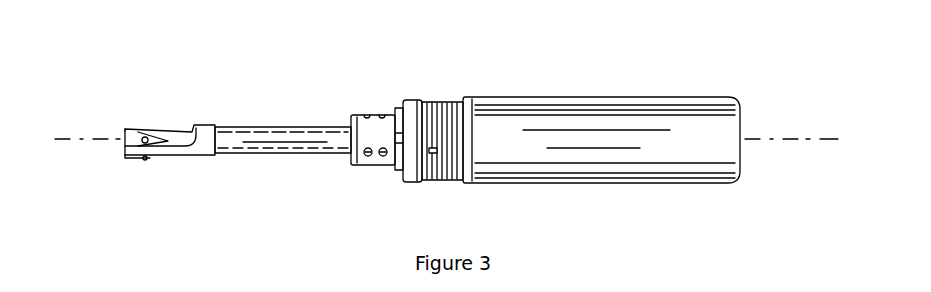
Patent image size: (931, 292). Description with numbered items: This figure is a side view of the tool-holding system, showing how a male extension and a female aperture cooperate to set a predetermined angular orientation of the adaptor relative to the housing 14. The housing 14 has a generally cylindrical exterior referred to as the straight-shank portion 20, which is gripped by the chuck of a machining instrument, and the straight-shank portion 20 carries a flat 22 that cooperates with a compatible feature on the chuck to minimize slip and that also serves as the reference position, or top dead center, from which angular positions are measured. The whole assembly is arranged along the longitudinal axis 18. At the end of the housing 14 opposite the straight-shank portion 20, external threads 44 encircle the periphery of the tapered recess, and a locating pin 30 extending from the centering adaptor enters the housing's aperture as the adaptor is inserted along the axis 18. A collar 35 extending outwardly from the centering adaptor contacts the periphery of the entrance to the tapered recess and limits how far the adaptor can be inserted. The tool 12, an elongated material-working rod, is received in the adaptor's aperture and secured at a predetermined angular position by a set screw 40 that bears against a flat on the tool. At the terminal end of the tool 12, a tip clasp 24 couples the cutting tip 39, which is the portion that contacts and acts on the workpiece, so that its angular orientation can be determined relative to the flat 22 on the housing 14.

The tool 12 is at (260, 125).
The housing 14 is at (633, 184).
The longitudinal axis 18 is at (445, 139).
The straight-shank portion 20 is at (687, 150).
The flat 22 is at (585, 100).
The tip clasp 24 is at (178, 138).
The locating pin 30 is at (424, 182).
The collar 35 is at (415, 100).
The cutting tip 39 is at (125, 156).
The set screw 40 is at (366, 114).
The external threads 44 is at (448, 101).